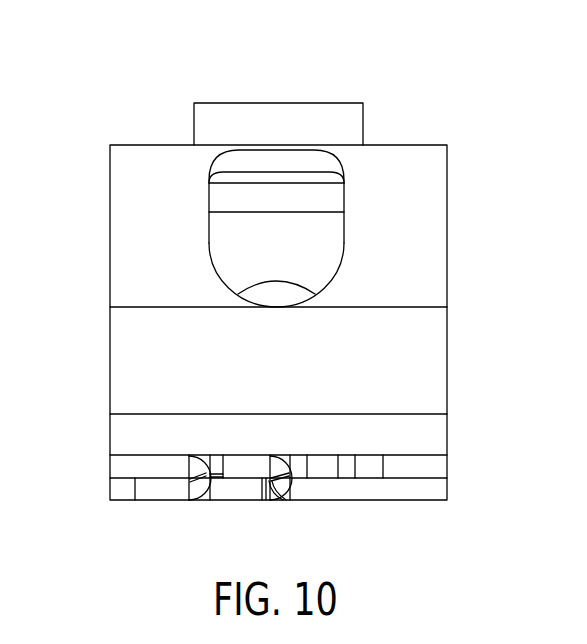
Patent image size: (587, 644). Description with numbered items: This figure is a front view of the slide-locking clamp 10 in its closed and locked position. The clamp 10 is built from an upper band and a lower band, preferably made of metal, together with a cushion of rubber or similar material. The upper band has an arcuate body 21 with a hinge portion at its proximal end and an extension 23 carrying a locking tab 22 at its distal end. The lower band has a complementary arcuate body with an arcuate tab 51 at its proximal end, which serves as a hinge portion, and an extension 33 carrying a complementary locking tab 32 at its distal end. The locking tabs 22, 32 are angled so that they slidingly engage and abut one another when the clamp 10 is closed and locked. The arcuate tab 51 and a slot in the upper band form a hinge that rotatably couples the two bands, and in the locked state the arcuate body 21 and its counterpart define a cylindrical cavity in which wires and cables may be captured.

The clamp 10 is at (97, 95).
The arcuate body 21 is at (433, 201).
The locking tab 22 is at (233, 493).
The extension 23 is at (433, 468).
The complementary locking tab 32 is at (242, 467).
The extension 33 is at (433, 490).
The arcuate tab 51 is at (289, 118).